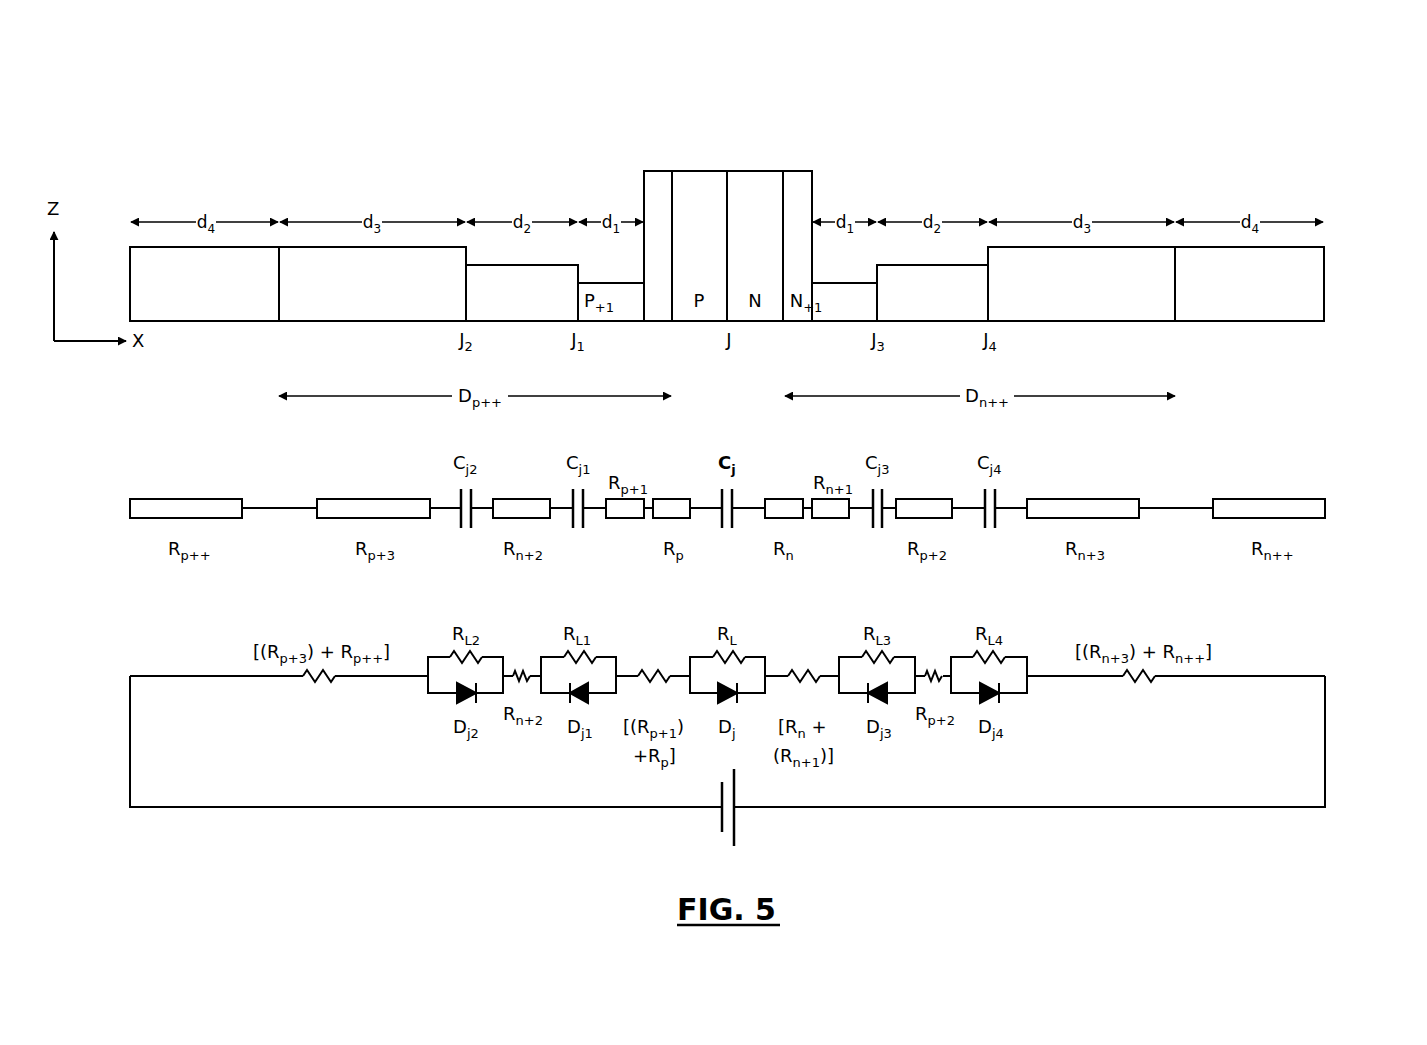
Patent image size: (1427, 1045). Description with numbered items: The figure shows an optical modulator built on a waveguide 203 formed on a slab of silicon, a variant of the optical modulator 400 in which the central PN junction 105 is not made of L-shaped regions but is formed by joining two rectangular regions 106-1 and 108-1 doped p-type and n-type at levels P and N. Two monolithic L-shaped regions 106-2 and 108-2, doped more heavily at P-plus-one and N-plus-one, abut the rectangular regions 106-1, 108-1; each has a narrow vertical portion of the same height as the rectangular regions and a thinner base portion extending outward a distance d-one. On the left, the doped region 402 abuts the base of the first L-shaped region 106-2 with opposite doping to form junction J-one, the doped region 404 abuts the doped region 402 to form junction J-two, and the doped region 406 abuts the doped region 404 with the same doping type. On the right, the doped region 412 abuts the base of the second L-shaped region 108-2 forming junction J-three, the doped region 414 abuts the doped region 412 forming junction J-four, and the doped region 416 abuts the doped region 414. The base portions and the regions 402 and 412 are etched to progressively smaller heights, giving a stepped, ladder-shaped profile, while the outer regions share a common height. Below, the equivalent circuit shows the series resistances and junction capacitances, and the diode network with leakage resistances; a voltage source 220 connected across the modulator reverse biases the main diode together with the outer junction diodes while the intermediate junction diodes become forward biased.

The optical modulator 400 is at (993, 95).
The PN junction 105 is at (734, 151).
The rectangular region 106-1 is at (699, 171).
The first L-shaped region 106-2 is at (644, 207).
The rectangular region 108-1 is at (758, 171).
The second L-shaped region 108-2 is at (812, 207).
The waveguide 203 is at (1349, 284).
The doped region 406 is at (205, 322).
The doped region 404 is at (373, 322).
The doped region 402 is at (521, 322).
The doped region 412 is at (935, 322).
The doped region 414 is at (1075, 322).
The doped region 416 is at (1237, 322).
The voltage source 220 is at (718, 822).